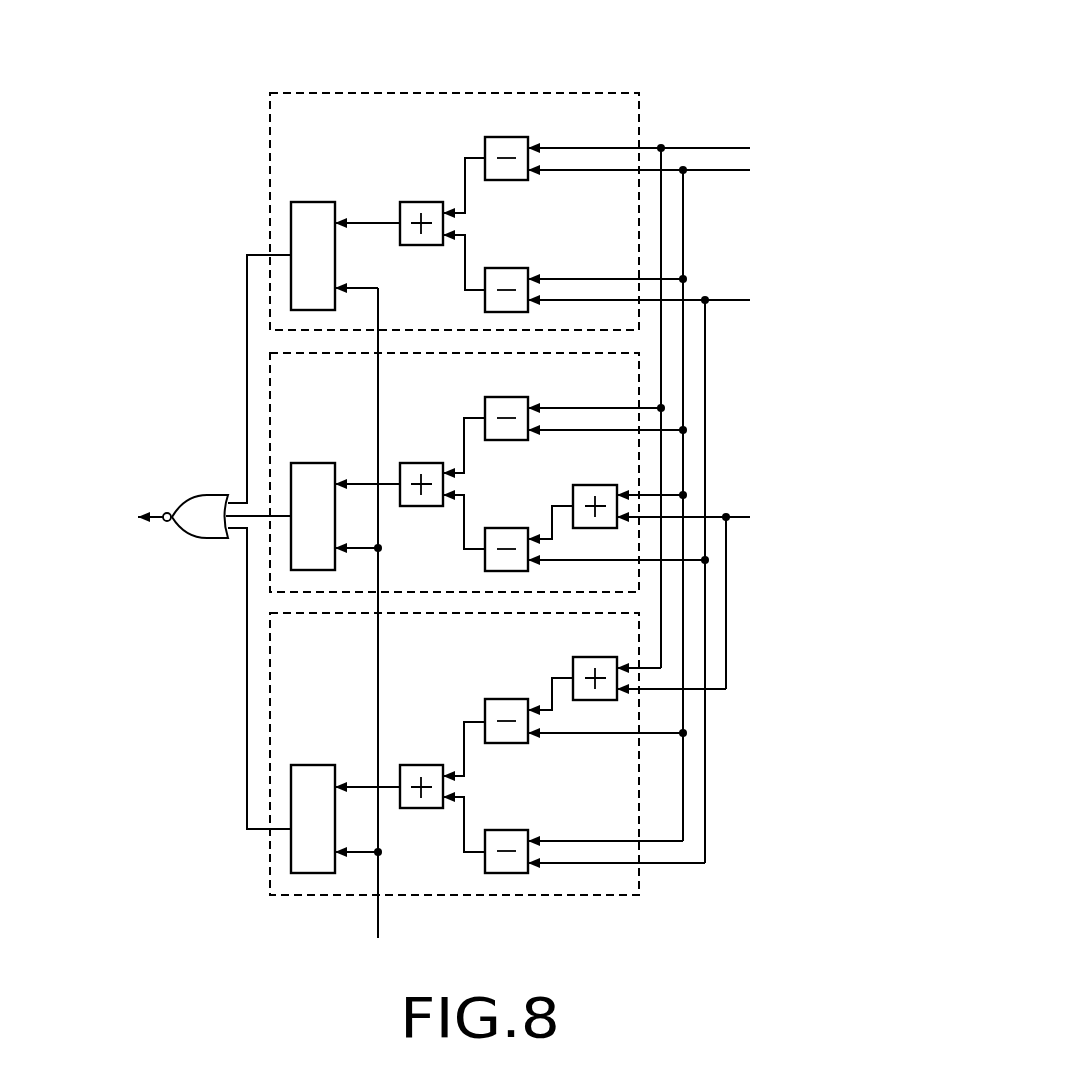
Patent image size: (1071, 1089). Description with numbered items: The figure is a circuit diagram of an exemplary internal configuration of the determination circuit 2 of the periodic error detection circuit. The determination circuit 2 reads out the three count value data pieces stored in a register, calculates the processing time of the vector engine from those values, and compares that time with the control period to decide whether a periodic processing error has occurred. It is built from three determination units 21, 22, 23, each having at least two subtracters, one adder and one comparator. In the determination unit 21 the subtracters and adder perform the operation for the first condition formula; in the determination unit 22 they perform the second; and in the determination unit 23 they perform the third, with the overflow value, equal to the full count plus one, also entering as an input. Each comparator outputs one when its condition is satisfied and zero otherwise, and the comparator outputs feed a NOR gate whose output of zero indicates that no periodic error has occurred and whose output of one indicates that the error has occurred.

The determination circuit 2 is at (646, 47).
The determination unit 21 is at (462, 211).
The determination unit 22 is at (498, 472).
The determination unit 23 is at (498, 754).